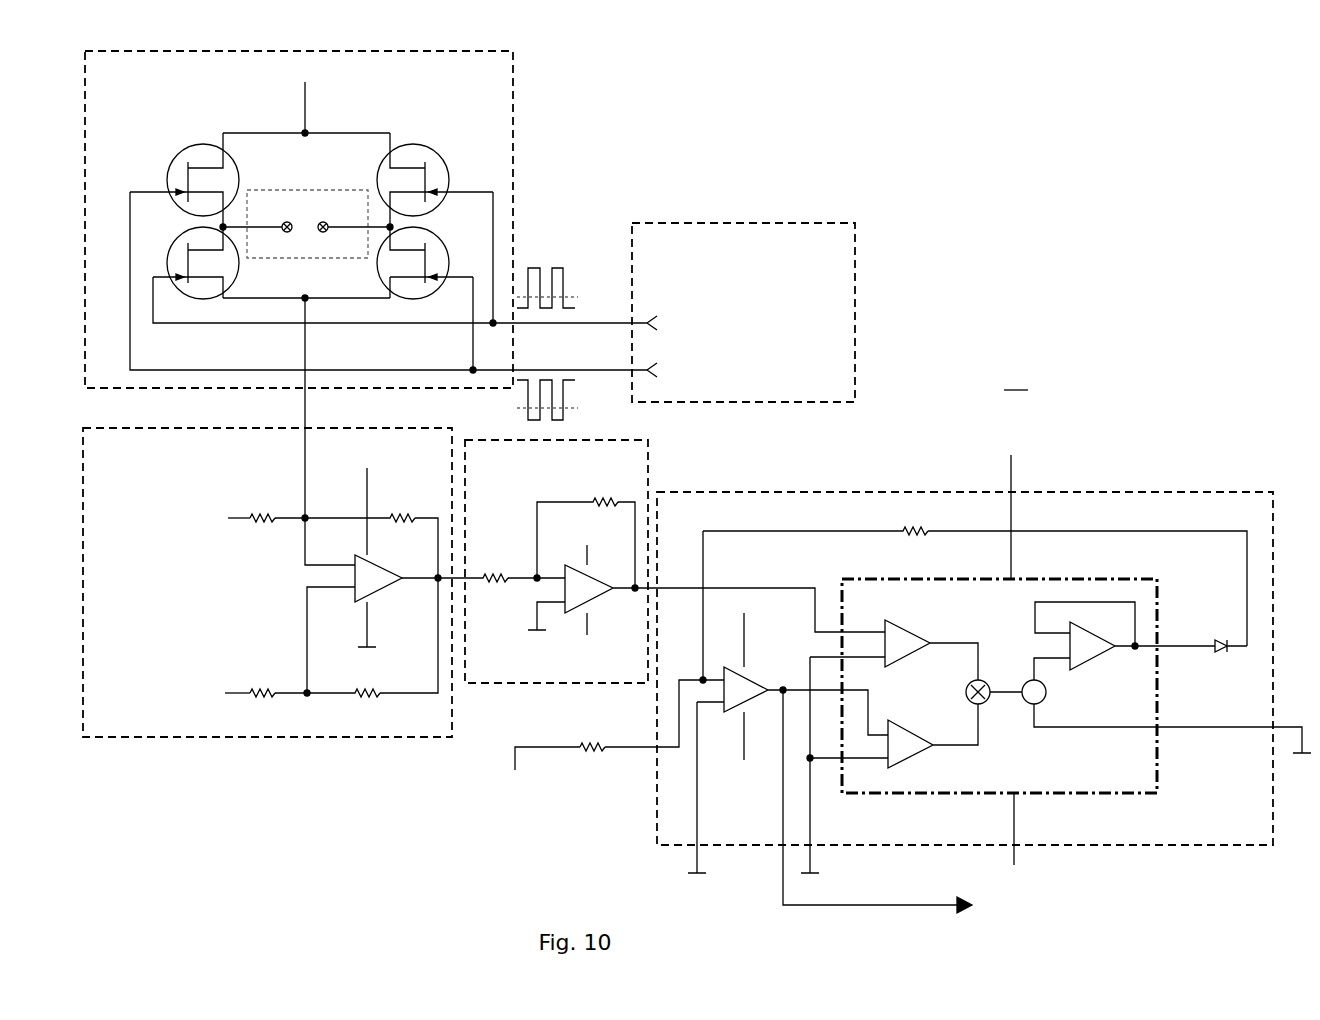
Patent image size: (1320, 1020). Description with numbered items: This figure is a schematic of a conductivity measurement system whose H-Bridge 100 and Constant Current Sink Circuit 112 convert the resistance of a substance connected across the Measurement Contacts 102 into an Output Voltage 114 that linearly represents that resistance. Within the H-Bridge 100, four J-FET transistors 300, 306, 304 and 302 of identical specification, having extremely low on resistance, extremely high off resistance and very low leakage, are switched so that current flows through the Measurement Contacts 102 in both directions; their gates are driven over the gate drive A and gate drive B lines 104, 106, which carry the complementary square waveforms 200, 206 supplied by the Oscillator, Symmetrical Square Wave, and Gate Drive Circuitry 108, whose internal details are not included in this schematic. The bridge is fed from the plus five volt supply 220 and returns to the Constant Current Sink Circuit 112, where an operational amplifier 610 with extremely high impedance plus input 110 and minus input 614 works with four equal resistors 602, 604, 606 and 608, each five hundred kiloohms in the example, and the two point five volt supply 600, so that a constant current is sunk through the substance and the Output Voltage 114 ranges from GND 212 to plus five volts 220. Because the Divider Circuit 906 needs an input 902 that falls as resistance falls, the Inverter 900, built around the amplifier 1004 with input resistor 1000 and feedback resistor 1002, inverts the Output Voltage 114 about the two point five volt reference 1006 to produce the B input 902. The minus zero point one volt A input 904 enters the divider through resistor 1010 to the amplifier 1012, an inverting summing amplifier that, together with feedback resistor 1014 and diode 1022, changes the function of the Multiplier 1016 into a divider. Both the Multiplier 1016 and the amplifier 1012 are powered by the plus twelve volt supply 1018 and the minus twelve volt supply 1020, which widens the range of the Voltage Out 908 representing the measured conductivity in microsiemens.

The H-Bridge 100 is at (480, 105).
The measurement contacts 102 is at (298, 194).
The gate drive A line 104 is at (560, 329).
The gate drive B line 106 is at (561, 366).
The oscillator, symmetrical square wave, and gate drive circuitry 108 is at (843, 266).
The '+' input 110 is at (302, 418).
The constant current sink circuit 112 is at (153, 455).
The output voltage 114 is at (434, 584).
The gate drive A square wave 200 is at (565, 263).
The gate drive B square wave 206 is at (522, 421).
The GND 212 is at (363, 632).
The +5 volts 220 is at (300, 118).
The transistor Q1 300 is at (183, 178).
The transistor Q4 302 is at (183, 260).
The transistor Q3 304 is at (433, 178).
The transistor Q2 306 is at (433, 260).
The 2.5 volts power supply 600 is at (237, 513).
The resistor R1 602 is at (252, 524).
The resistor R2 604 is at (412, 508).
The resistor R3 606 is at (250, 685).
The resistor R4 608 is at (355, 685).
The operational amplifier 610 is at (371, 600).
The '−' input 614 is at (305, 617).
The inverter 900 is at (632, 470).
The inverter output 902 is at (738, 585).
The A input 904 is at (513, 765).
The divider circuit 906 is at (1173, 508).
The voltage out 908 is at (933, 902).
The resistor R5 1000 is at (498, 571).
The resistor R6 1002 is at (593, 501).
The IC2 1004 is at (600, 593).
The reference voltage 1006 is at (533, 628).
The resistor R7 1010 is at (604, 758).
The IC3 1012 is at (753, 688).
The resistor R8 1014 is at (903, 526).
The multiplier 1016 is at (877, 597).
The +12 volt power supply 1018 is at (748, 656).
The −12 volt power supply 1020 is at (740, 749).
The diode D1 1022 is at (1232, 653).